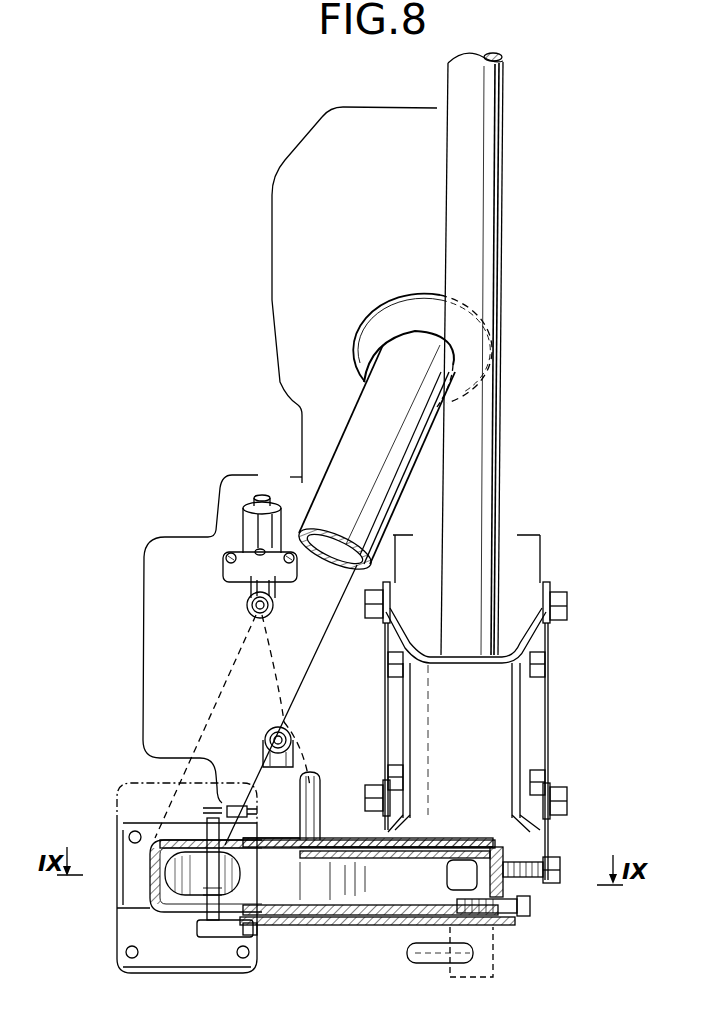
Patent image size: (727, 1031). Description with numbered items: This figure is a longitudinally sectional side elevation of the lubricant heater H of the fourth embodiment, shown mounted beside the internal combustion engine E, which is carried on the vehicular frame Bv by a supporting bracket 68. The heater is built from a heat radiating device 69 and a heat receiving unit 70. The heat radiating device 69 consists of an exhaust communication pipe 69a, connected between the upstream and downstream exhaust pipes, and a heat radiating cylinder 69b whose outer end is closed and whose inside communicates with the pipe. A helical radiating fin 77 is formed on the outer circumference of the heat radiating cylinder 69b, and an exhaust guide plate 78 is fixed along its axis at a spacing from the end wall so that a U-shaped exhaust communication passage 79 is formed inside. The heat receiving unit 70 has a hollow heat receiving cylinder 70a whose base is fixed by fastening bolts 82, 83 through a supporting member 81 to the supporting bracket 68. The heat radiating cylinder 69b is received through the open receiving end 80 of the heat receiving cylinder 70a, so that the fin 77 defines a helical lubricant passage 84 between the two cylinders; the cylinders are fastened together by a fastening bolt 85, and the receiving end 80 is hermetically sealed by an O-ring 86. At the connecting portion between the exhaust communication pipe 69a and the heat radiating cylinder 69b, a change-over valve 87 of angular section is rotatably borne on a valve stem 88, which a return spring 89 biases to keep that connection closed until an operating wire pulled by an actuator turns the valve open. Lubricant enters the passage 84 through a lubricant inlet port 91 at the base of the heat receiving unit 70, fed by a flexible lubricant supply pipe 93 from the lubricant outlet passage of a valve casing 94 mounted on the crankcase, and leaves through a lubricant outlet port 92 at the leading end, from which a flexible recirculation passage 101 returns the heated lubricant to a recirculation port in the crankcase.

The vehicular frame Bv is at (497, 288).
The internal combustion engine E is at (256, 262).
The valve casing 94 is at (245, 520).
The flexible lubricant supply pipe 93 is at (275, 675).
The supporting bracket 68 is at (522, 718).
The supporting member 81 is at (548, 840).
The fastening bolt 82 is at (567, 802).
The heat receiving unit 70 is at (486, 835).
The heat receiving cylinder 70a is at (450, 847).
The helical radiating fin 77 is at (440, 850).
The helical lubricant passage 84 is at (390, 850).
The U-shaped exhaust communication passage 79 is at (455, 873).
The O-ring 86 is at (292, 850).
The heat radiating cylinder 69b is at (348, 860).
The exhaust guide plate 78 is at (402, 905).
The fastening bolt 83 is at (560, 868).
The fastening bolt 85 is at (530, 908).
The change-over valve 87 is at (172, 890).
The exhaust communication pipe 69a is at (150, 868).
The receiving end 80 is at (253, 934).
The return spring 89 is at (204, 820).
The valve stem 88 is at (216, 803).
The heat radiating device 69 is at (268, 840).
The lubricant inlet port 91 is at (320, 825).
The lubricant outlet port 92 is at (483, 948).
The lubricant heater H is at (310, 933).
The flexible recirculation passage 101 is at (305, 928).